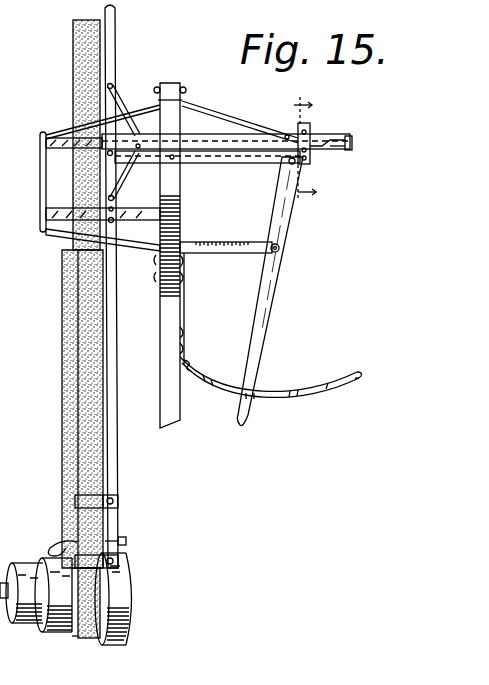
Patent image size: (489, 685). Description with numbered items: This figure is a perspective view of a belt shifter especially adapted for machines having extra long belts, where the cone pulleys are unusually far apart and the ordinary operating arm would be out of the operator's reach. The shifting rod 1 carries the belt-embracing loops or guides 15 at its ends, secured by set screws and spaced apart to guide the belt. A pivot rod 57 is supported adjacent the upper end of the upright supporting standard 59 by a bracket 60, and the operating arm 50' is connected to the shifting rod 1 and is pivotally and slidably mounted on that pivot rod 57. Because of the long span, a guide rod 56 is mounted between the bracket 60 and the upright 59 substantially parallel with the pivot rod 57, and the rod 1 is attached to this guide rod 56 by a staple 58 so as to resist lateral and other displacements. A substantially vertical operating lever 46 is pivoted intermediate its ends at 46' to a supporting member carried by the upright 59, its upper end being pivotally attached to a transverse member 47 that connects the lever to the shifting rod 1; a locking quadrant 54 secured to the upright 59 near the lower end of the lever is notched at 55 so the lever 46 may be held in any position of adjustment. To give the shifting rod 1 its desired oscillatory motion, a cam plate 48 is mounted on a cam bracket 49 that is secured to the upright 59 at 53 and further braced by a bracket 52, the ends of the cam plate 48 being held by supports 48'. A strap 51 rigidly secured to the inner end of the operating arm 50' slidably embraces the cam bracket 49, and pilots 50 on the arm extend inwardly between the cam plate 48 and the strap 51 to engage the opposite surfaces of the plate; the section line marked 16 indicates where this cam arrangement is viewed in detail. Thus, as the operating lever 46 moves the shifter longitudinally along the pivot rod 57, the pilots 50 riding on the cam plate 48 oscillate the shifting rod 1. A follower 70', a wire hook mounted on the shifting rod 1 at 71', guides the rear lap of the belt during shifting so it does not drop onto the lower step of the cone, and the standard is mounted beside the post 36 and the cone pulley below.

The shifting rod 1 is at (118, 466).
The loops or guides 15 is at (77, 498).
The section line 16 is at (305, 149).
The post 36 is at (51, 444).
The operating lever 46 is at (276, 291).
The pivot 46' is at (303, 255).
The transverse member 47 is at (153, 163).
The cam plate 48 is at (244, 127).
The supports 48' is at (325, 170).
The cam bracket 49 is at (322, 143).
The pilots 50 is at (328, 168).
The operating arm 50' is at (207, 172).
The strap 51 is at (293, 128).
The bracket 52 is at (191, 101).
The securing point 53 is at (175, 158).
The locking quadrant 54 is at (312, 385).
The notches 55 is at (212, 364).
The guide rod 56 is at (56, 210).
The pivot rod 57 is at (58, 143).
The staple 58 is at (111, 221).
The upright supporting standard 59 is at (173, 312).
The bracket 60 is at (60, 233).
The follower 70' is at (38, 533).
The mounting point 71' is at (142, 528).